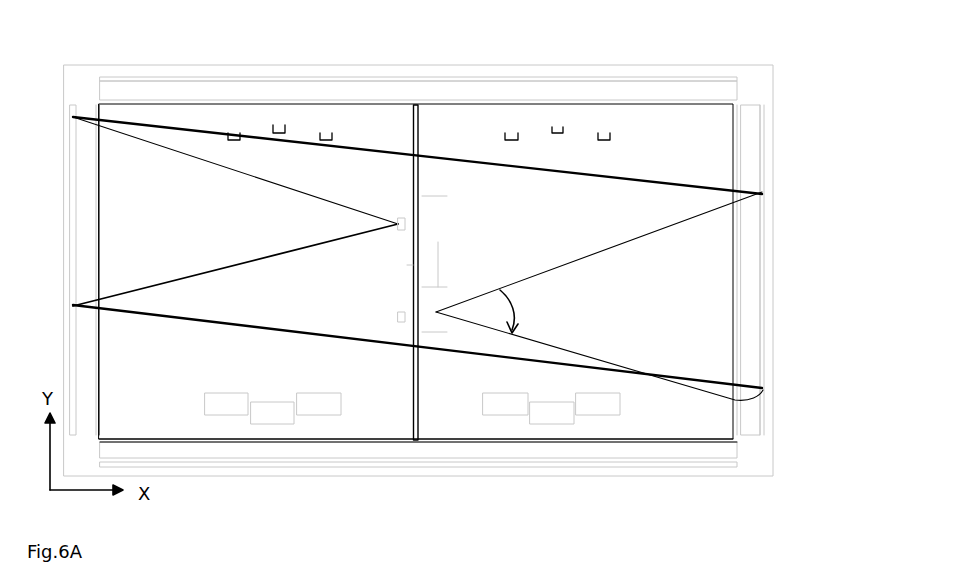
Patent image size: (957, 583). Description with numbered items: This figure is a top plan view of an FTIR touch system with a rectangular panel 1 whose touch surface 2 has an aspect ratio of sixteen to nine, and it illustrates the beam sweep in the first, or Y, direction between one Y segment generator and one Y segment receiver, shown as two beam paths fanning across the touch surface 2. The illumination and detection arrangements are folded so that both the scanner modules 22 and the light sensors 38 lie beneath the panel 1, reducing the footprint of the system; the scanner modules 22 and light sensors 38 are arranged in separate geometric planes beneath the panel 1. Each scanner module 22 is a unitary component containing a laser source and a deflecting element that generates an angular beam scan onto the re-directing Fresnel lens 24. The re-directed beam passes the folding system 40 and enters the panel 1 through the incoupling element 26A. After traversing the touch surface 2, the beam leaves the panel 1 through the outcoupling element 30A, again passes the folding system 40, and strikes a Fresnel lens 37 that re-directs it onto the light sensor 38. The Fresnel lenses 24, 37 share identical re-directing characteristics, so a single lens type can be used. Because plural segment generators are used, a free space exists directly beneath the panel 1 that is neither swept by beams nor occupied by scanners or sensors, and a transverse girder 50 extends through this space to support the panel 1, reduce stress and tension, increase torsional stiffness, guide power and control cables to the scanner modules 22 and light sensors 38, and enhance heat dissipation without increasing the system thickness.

The panel 1 is at (671, 58).
The touch surface 2 is at (445, 176).
The scanner module 22 is at (317, 410).
The re-directing Fresnel lens 24 is at (176, 103).
The incoupling element 26A is at (377, 90).
The outcoupling element 30A is at (88, 260).
The Fresnel lens 37 is at (100, 338).
The light sensor 38 is at (326, 132).
The folding system 40 is at (127, 75).
The transverse girder 50 is at (418, 412).